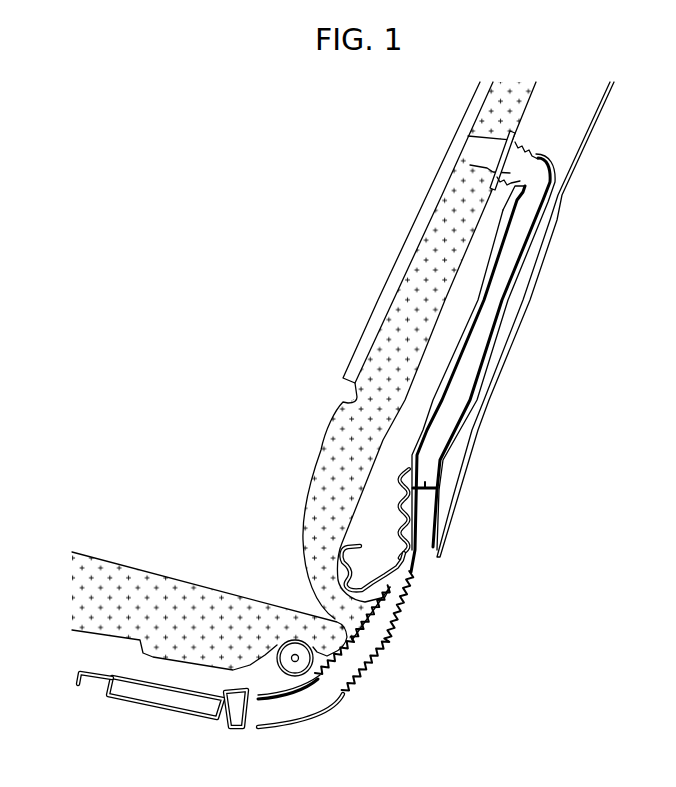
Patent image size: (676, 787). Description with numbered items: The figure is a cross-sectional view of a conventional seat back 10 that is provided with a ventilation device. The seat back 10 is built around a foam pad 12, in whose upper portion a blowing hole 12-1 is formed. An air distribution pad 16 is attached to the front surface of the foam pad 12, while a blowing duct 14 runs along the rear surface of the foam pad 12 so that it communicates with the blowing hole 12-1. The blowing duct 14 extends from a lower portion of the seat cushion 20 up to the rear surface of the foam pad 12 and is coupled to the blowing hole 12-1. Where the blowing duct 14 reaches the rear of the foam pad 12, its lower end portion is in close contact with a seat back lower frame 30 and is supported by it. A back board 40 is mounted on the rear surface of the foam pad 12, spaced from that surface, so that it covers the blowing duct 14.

The seat back 10 is at (390, 213).
The foam pad 12 is at (312, 424).
The blowing hole 12-1 is at (477, 150).
The blowing duct 14 is at (493, 322).
The air distribution pad 16 is at (387, 303).
The seat cushion 20 is at (205, 603).
The seat back lower frame 30 is at (385, 575).
The back board 40 is at (560, 225).